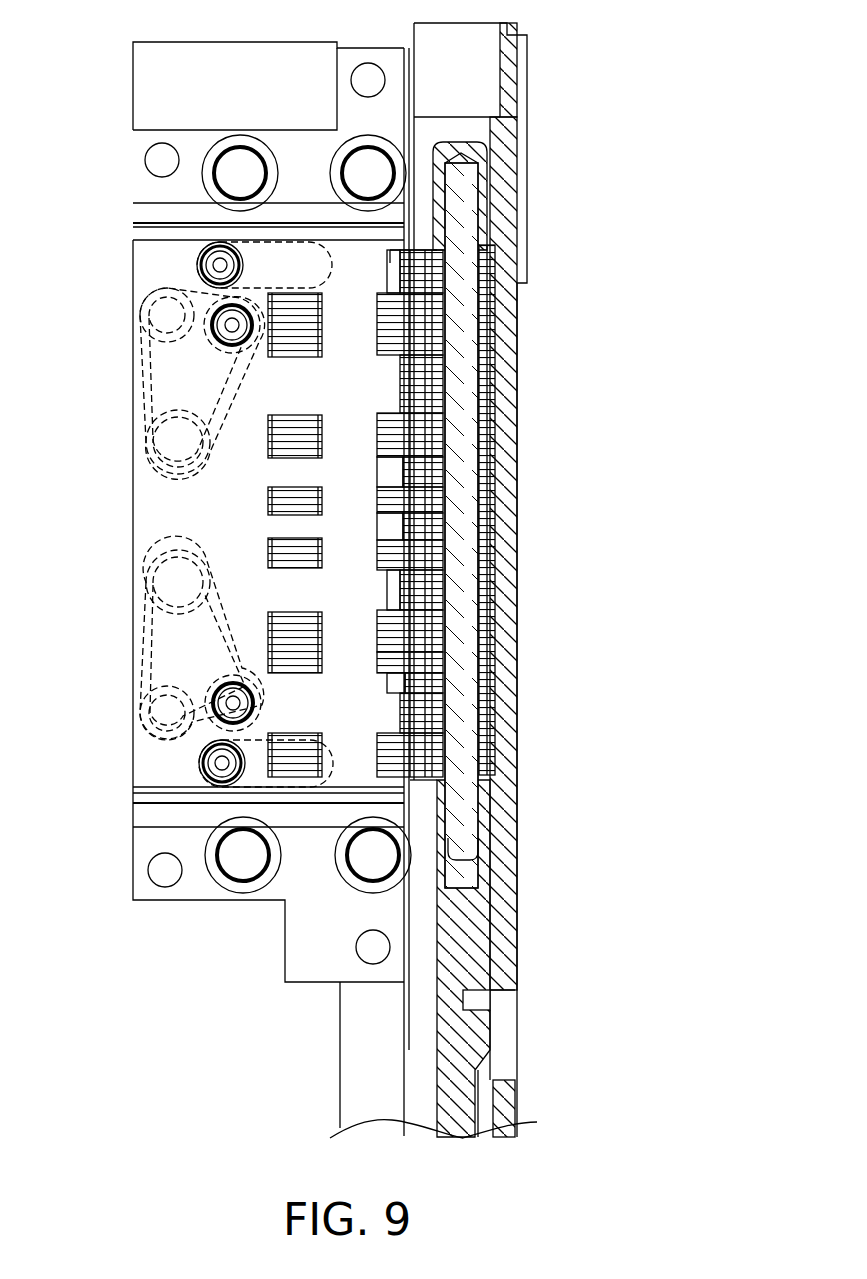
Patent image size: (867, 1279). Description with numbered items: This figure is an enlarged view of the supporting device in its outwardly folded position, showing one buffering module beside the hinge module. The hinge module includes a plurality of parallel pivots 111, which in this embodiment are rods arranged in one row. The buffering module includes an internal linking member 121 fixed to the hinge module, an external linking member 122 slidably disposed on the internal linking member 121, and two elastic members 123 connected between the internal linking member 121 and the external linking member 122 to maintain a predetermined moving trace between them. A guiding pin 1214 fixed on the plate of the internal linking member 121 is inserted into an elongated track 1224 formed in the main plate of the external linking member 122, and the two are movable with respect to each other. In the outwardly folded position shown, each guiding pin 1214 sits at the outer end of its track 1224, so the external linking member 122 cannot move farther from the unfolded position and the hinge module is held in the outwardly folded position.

The pivot 111 is at (458, 243).
The internal linking member 121 is at (131, 508).
The external linking member 122 is at (175, 138).
The elastic member 123 is at (136, 369).
The guiding pin 1214 is at (220, 265).
The elongated track 1224 is at (297, 250).